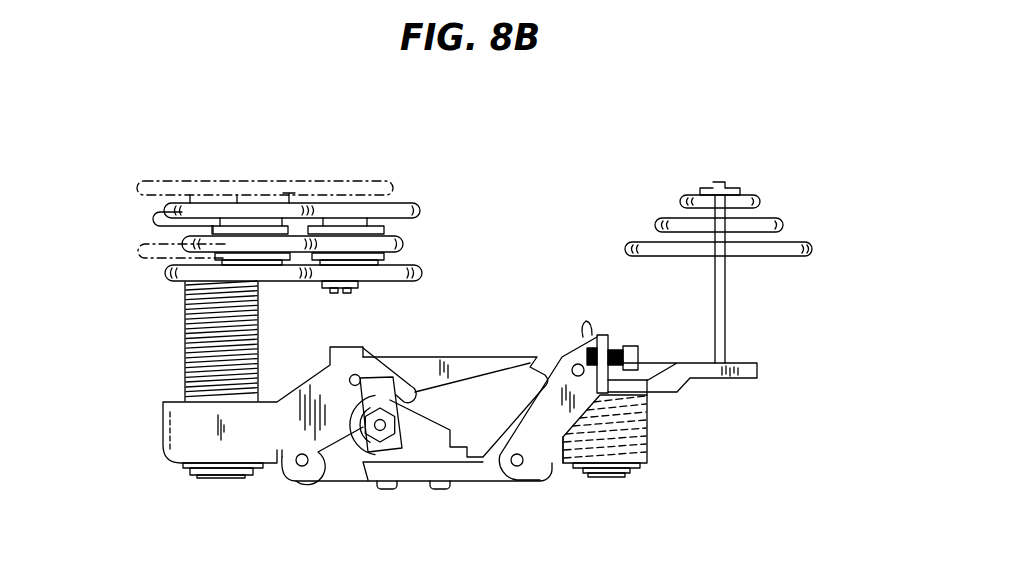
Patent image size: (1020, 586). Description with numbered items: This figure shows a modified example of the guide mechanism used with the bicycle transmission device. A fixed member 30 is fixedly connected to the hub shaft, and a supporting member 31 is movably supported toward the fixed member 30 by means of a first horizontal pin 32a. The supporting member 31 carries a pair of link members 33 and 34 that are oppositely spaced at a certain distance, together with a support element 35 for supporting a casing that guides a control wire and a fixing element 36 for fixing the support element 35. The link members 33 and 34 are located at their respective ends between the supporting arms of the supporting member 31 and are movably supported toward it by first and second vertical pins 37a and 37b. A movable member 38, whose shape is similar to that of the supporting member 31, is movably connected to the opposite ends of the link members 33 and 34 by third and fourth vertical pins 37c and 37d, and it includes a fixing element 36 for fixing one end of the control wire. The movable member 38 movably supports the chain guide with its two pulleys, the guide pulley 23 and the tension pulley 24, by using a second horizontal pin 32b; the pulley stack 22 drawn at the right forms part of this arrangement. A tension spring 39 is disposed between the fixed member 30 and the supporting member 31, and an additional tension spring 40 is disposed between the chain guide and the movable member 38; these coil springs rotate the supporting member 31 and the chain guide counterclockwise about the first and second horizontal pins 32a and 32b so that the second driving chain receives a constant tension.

The fixed contact stack 22 is at (795, 248).
The guide pulley 23 is at (413, 210).
The tension pulley 24 is at (165, 276).
The fixed member 30 is at (758, 368).
The supporting member 31 is at (650, 432).
The first horizontal pin 32a is at (215, 476).
The second horizontal pin 32b is at (607, 478).
The link member 33 is at (482, 472).
The link member 34 is at (470, 365).
The support element 35 is at (632, 348).
The fixing element 36 is at (385, 420).
The first vertical pin 37a is at (520, 468).
The second vertical pin 37b is at (576, 368).
The third vertical pin 37c is at (295, 470).
The fourth vertical pin 37d is at (358, 378).
The movable member 38 is at (165, 427).
The tension spring 39 is at (643, 465).
The tension spring 40 is at (183, 326).